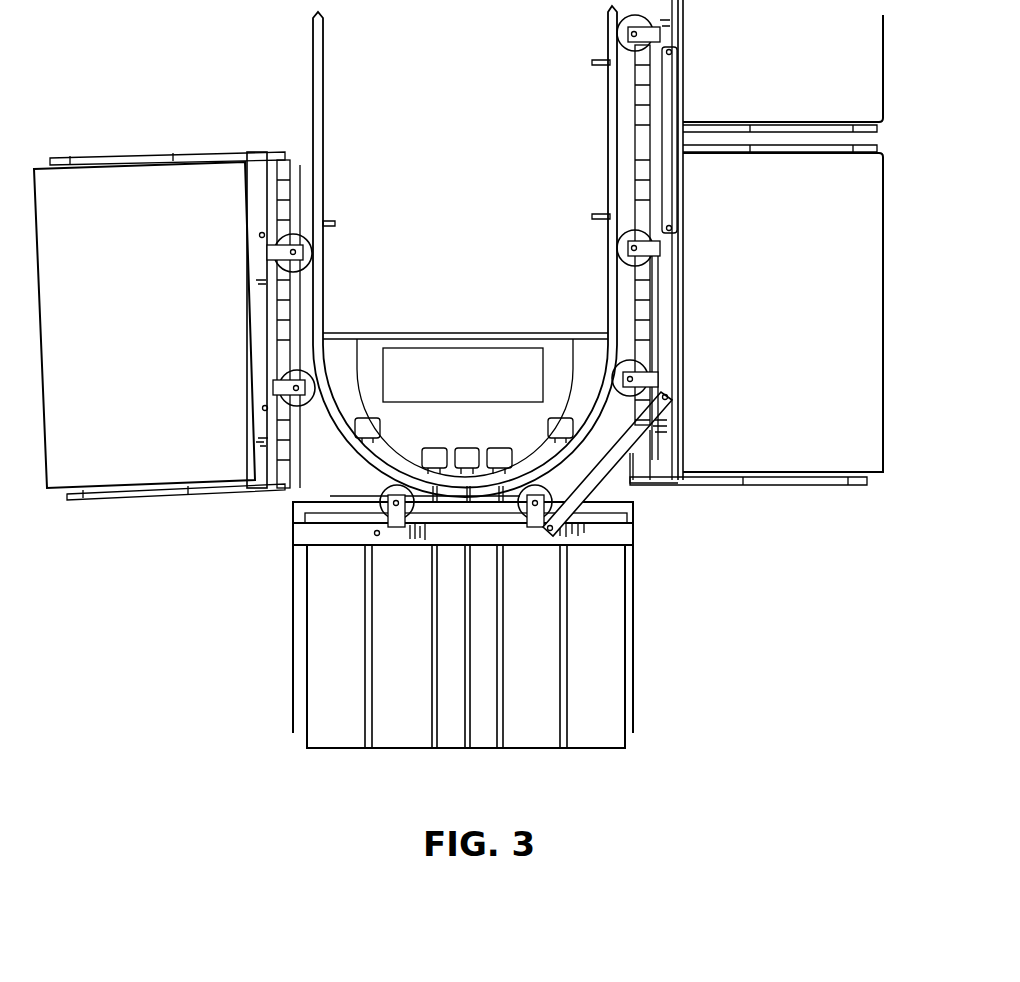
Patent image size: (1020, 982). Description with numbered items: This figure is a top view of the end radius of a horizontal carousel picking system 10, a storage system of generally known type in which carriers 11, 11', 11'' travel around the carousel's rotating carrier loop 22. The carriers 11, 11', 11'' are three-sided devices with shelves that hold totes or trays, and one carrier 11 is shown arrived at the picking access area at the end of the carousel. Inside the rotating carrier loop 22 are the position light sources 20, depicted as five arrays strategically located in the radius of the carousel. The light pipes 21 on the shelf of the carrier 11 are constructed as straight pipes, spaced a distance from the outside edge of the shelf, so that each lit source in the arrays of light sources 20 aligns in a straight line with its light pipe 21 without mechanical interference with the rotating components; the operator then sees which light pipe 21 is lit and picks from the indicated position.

The horizontal carousel picking system 10 is at (233, 592).
The carrier 11 is at (503, 646).
The carrier 11' is at (747, 269).
The carrier 11'' is at (174, 326).
The light sources 20 is at (460, 446).
The light pipes 21 is at (432, 630).
The rotating carrier loop 22 is at (322, 140).